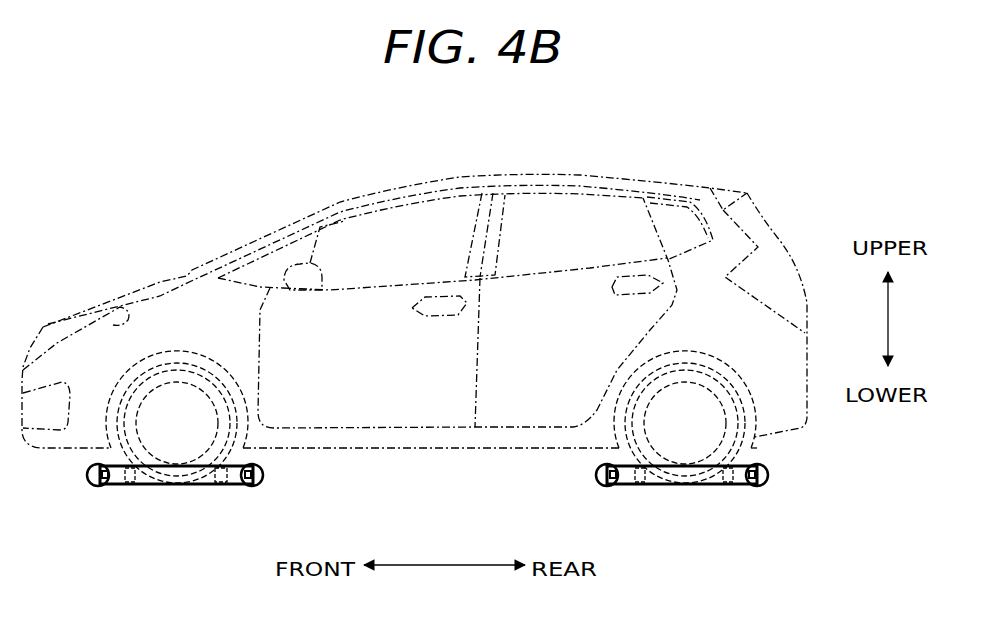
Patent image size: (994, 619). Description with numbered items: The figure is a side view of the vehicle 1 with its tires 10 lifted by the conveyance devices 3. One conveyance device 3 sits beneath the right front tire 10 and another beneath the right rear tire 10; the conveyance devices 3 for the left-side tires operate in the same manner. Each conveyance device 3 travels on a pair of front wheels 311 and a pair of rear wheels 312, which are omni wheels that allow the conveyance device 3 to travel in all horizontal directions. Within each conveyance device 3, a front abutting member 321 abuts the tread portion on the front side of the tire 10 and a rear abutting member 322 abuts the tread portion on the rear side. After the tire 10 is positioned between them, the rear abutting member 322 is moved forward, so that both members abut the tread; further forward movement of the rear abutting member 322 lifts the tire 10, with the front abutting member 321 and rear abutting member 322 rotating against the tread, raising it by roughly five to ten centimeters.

The vehicle 1 is at (769, 127).
The tire 10 is at (160, 377).
The conveyance device 3 is at (285, 476).
The front wheel 311 is at (88, 474).
The rear wheel 312 is at (264, 482).
The front abutting member 321 is at (137, 484).
The rear abutting member 322 is at (218, 484).